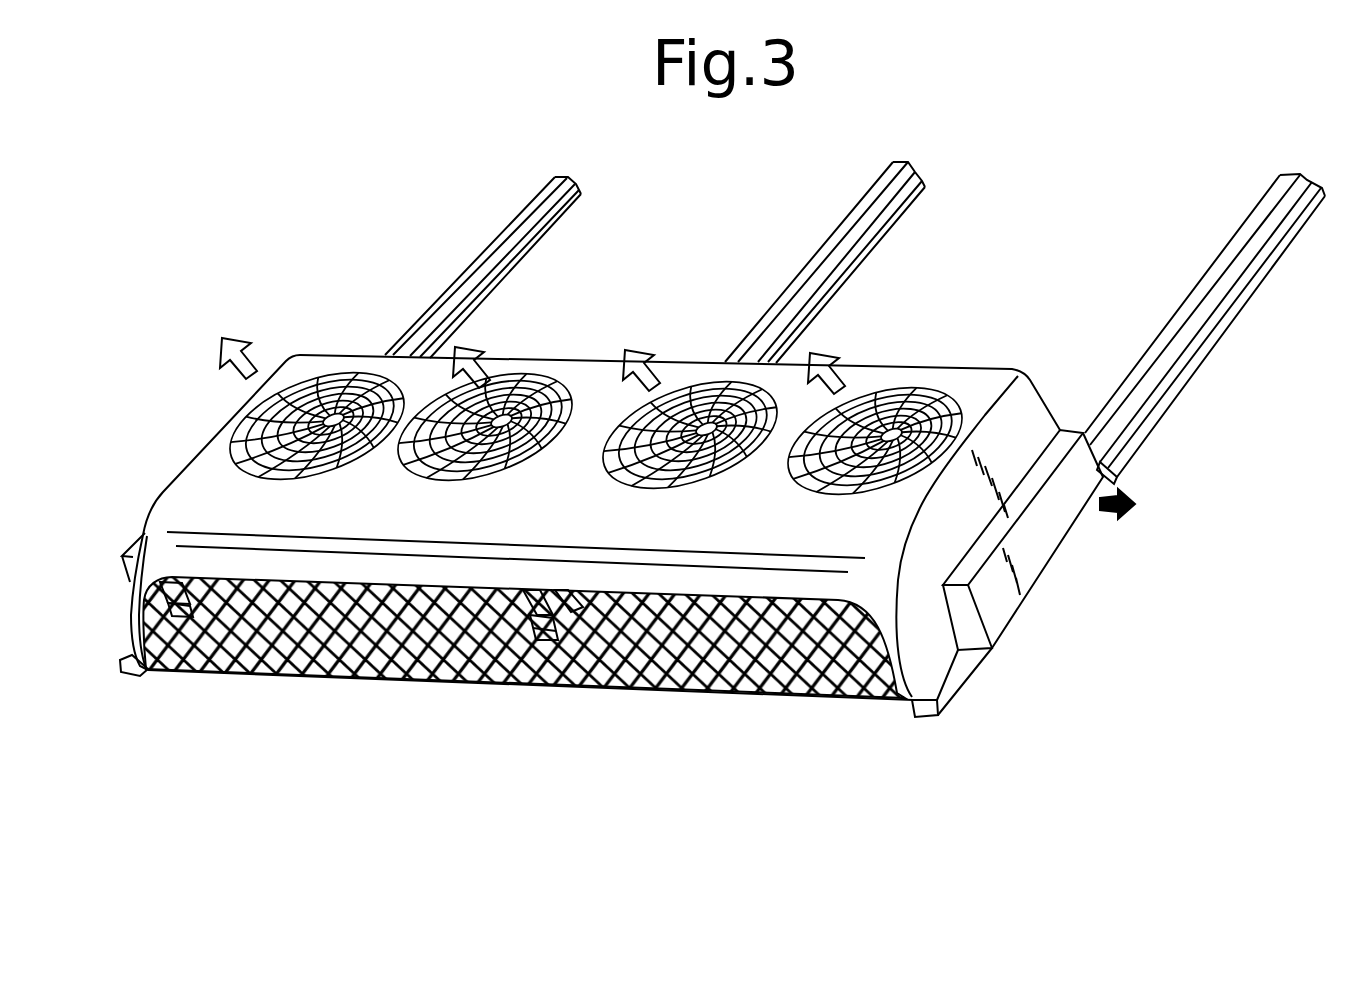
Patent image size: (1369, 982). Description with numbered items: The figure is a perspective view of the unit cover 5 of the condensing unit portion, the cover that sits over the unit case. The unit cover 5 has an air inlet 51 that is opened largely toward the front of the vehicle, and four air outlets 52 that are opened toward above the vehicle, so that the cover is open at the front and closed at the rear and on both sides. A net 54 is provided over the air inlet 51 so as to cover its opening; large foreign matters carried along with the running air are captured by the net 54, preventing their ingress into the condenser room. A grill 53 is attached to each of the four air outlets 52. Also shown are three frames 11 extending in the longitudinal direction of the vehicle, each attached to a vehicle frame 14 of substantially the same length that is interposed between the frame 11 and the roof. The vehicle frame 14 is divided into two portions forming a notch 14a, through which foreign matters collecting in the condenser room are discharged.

The unit cover 5 is at (710, 535).
The frame 11 is at (543, 198).
The vehicle frame 14 is at (472, 265).
The notch 14a is at (1088, 492).
The air inlet 51 is at (451, 610).
The air outlet 52 is at (528, 395).
The grill 53 is at (892, 398).
The net 54 is at (568, 680).